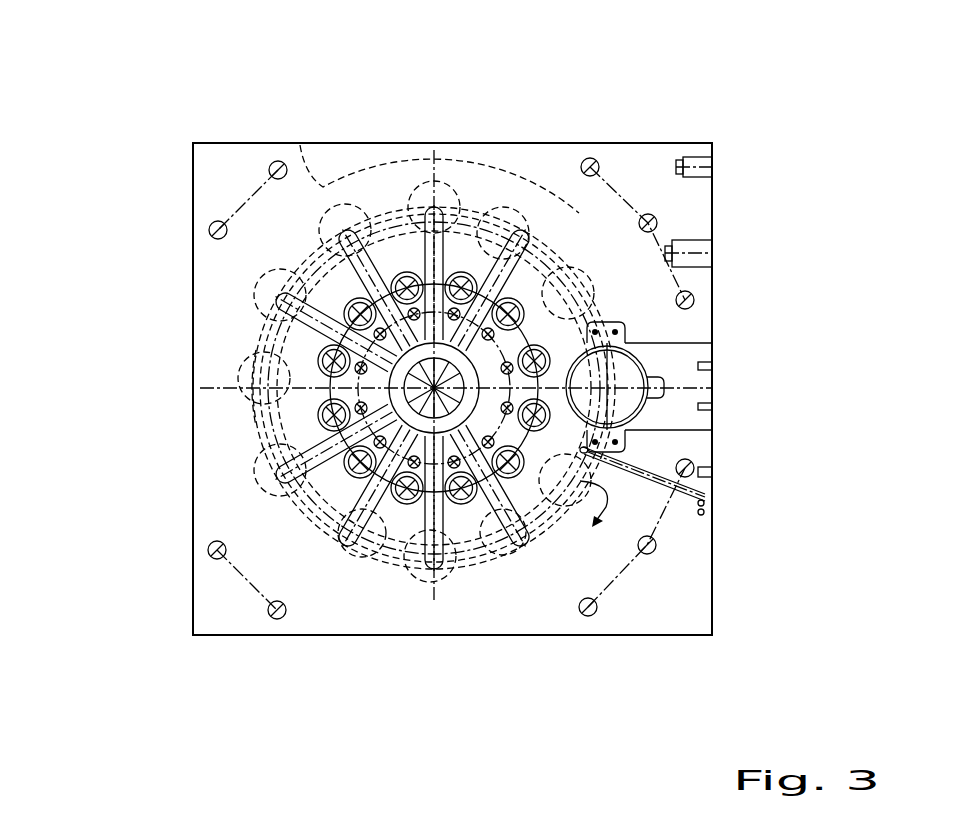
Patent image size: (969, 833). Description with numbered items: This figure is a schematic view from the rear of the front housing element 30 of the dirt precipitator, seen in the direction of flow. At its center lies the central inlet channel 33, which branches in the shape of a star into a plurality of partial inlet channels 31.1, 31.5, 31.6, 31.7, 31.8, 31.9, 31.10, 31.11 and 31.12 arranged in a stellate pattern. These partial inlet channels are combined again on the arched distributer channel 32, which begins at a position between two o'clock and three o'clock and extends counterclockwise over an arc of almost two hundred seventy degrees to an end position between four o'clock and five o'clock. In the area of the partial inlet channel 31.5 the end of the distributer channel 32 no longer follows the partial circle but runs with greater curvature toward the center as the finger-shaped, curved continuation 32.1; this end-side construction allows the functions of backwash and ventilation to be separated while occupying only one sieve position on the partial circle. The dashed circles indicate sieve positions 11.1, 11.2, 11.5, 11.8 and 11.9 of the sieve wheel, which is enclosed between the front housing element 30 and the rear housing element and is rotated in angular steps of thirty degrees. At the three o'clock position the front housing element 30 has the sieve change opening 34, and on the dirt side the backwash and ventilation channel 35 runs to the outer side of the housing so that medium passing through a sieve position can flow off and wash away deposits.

The front housing element 30 is at (147, 128).
The partial inlet channel 31.1 is at (514, 185).
The partial inlet channel 31.5 is at (492, 595).
The partial inlet channel 31.6 is at (418, 601).
The partial inlet channel 31.7 is at (369, 595).
The partial inlet channel 31.8 is at (322, 585).
The partial inlet channel 31.9 is at (189, 357).
The partial inlet channel 31.10 is at (323, 196).
The partial inlet channel 31.11 is at (370, 185).
The partial inlet channel 31.12 is at (420, 180).
The sieve position 11.1 is at (561, 139).
The sieve position 11.2 is at (701, 232).
The sieve position 11.5 is at (699, 537).
The sieve position 11.8 is at (174, 459).
The sieve position 11.9 is at (166, 368).
The arched distributer channel 32 is at (236, 636).
The finger-shaped curved continuation 32.1 is at (580, 626).
The central inlet channel 33 is at (715, 343).
The sieve change opening 34 is at (704, 386).
The backwash and ventilation channel 35 is at (711, 474).